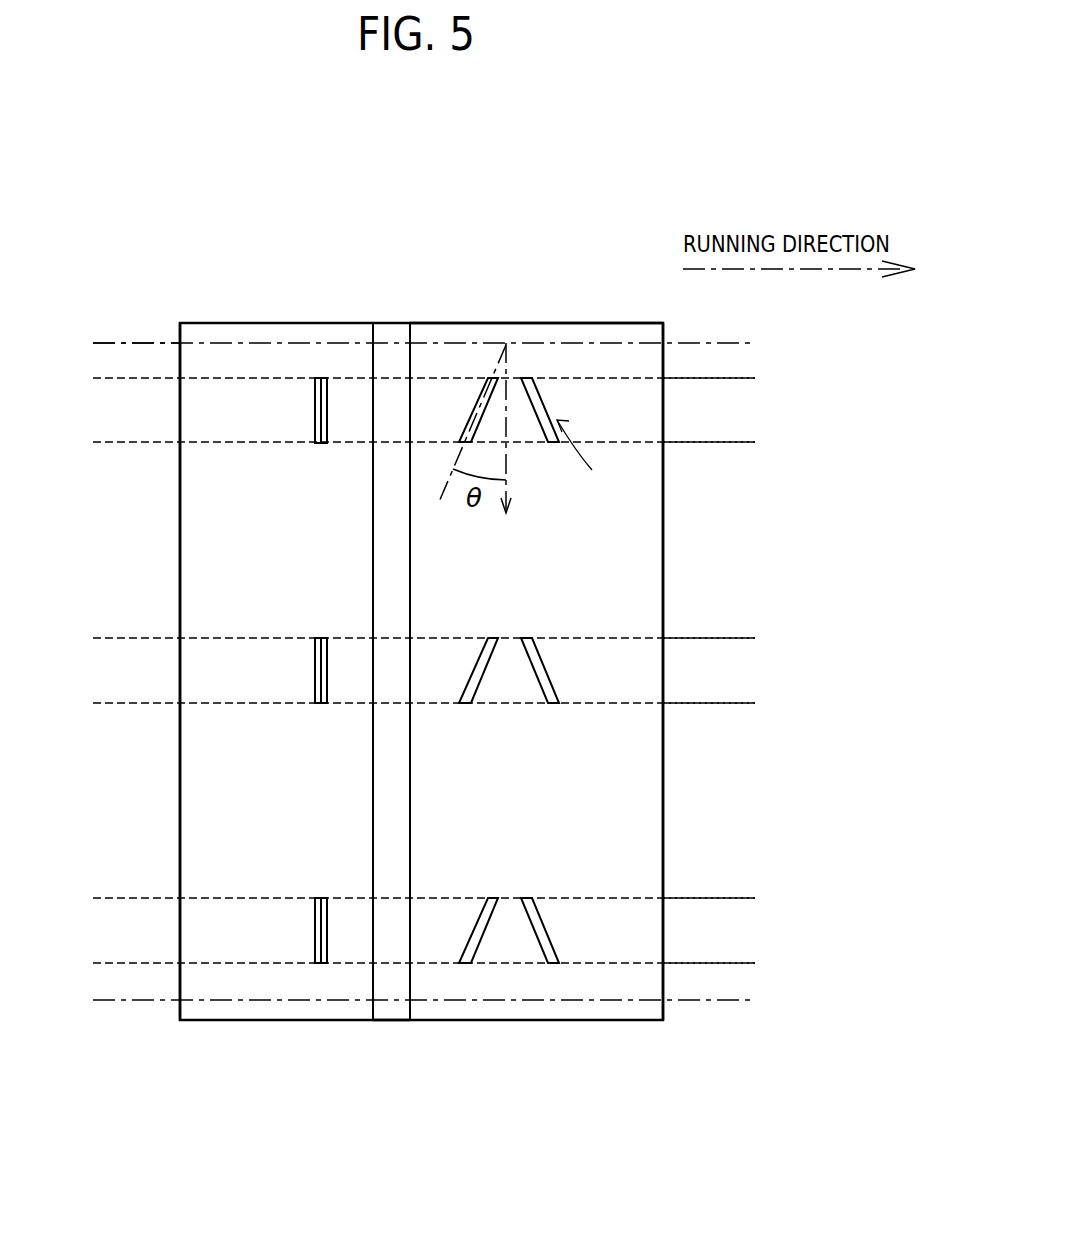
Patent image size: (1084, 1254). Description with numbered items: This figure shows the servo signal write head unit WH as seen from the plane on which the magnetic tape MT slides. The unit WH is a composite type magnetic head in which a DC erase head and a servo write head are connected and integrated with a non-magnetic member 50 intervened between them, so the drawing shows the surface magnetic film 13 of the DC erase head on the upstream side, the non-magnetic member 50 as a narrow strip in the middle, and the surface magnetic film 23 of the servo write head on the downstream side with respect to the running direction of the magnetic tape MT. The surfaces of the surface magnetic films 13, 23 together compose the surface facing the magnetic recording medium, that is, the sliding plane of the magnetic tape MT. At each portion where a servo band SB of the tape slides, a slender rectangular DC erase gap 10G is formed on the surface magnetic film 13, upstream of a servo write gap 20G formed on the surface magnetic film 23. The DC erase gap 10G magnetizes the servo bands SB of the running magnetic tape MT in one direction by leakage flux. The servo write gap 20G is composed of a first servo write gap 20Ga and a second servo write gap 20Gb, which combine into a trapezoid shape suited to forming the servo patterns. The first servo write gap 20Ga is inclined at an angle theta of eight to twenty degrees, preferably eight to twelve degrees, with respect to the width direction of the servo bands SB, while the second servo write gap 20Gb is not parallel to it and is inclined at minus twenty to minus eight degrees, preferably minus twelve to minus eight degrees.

The DC erase gap 10G is at (310, 420).
The servo write gap 20G is at (618, 284).
The first servo write gap 20Ga is at (473, 403).
The second servo write gap 20Gb is at (542, 395).
The surface magnetic film 13 is at (197, 783).
The surface magnetic film 23 is at (645, 788).
The non-magnetic member 50 is at (388, 1010).
The magnetic tape MT is at (155, 343).
The servo signal write head unit WH is at (402, 253).
The servo band SB is at (740, 378).